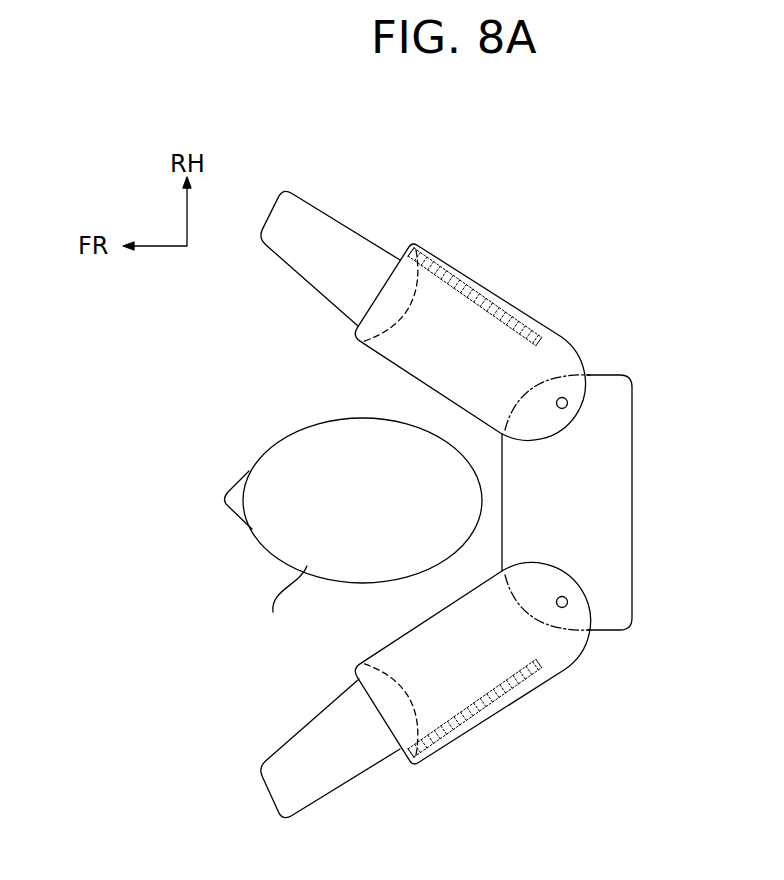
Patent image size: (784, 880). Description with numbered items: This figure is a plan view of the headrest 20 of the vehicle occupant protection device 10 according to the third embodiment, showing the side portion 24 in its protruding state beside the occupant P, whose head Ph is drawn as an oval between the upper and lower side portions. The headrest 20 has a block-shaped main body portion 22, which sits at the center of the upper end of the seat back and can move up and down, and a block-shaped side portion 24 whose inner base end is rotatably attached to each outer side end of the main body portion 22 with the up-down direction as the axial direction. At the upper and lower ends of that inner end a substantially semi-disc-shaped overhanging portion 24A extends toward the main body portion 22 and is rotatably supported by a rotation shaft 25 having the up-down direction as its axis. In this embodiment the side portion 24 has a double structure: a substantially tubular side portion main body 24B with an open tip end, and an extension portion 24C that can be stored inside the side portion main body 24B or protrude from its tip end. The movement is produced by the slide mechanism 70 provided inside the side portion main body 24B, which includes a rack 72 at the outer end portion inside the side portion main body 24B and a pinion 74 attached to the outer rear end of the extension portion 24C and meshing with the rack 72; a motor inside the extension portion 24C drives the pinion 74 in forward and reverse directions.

The head protection device 10 is at (557, 224).
The headrest 20 is at (653, 474).
The main body portion 22 is at (624, 520).
The side portion 24 is at (478, 272).
The overhanging portion 24A is at (562, 433).
The side portion main body 24B is at (578, 348).
The extension portion 24C is at (340, 222).
The rotation shaft 25 is at (568, 406).
The slide mechanism 70 is at (471, 312).
The rack 72 is at (523, 310).
The pinion 74 is at (415, 246).
The occupant P is at (289, 432).
The head of occupant Ph is at (282, 604).